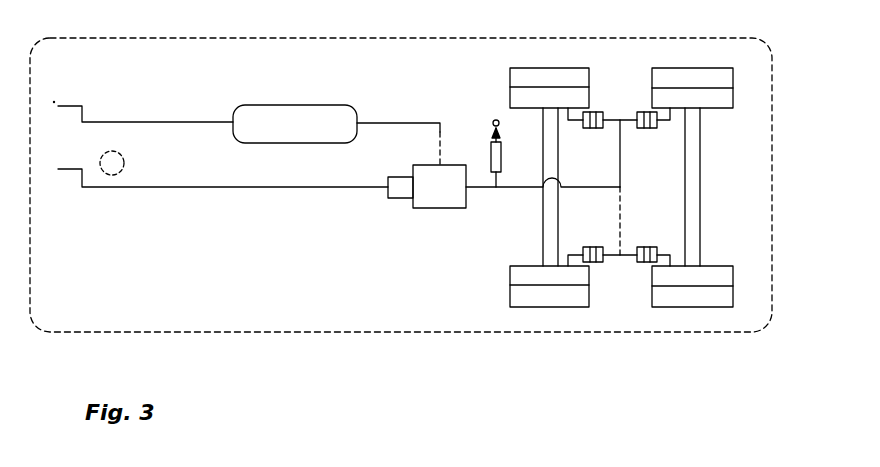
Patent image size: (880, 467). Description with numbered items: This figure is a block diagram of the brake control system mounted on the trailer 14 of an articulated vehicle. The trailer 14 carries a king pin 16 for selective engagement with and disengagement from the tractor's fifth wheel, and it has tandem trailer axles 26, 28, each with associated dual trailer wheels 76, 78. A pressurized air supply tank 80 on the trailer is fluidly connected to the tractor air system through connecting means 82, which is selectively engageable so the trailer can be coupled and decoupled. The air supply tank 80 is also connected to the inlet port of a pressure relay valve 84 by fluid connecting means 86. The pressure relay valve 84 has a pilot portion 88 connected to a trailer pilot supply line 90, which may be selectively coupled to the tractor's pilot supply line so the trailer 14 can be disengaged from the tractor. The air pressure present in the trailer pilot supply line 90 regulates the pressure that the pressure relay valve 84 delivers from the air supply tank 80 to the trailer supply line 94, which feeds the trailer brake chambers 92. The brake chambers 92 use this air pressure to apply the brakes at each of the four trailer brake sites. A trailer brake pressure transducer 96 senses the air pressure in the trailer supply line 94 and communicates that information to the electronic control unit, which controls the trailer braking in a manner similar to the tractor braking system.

The trailer 14 is at (397, 340).
The king pin 16 is at (118, 172).
The tandem trailer axle 26 is at (518, 65).
The tandem trailer axle 28 is at (680, 65).
The dual trailer wheels 76 is at (522, 293).
The dual trailer wheels 78 is at (681, 325).
The air supply tank 80 is at (233, 108).
The connecting means 82 is at (82, 110).
The pressure relay valve 84 is at (430, 208).
The fluid connecting means 86 is at (445, 131).
The pilot portion 88 is at (400, 198).
The trailer pilot supply line 90 is at (82, 182).
The trailer brake chambers 92 is at (605, 112).
The trailer supply line 94 is at (523, 189).
The trailer brake pressure transducer 96 is at (490, 140).